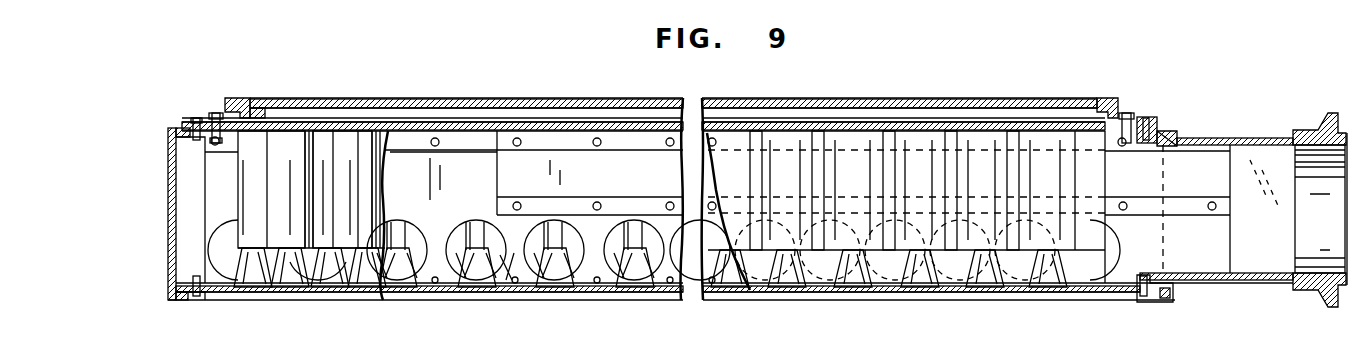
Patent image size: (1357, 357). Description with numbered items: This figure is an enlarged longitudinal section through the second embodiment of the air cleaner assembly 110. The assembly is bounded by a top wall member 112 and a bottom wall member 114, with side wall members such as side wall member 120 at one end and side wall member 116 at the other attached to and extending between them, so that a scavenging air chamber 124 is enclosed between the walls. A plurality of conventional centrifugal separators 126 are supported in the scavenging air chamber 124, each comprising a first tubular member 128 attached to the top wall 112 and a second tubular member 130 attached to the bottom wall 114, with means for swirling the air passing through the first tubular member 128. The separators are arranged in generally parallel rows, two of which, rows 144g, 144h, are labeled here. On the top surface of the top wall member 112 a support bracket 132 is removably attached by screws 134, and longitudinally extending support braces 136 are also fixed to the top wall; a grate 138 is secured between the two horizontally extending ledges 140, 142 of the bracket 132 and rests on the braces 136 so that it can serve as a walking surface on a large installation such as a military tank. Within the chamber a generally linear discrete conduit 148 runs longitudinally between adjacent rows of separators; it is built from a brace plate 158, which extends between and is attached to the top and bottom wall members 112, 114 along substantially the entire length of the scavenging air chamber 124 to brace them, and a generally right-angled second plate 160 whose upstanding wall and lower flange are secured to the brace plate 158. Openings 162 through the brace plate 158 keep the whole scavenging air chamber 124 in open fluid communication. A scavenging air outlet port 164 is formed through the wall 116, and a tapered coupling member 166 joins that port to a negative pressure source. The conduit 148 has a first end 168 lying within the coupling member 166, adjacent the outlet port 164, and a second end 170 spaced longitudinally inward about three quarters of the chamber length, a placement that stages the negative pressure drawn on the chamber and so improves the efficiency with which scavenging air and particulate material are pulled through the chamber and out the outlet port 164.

The air cleaner assembly 110 is at (749, 188).
The top wall member 112 is at (452, 125).
The bottom wall member 114 is at (563, 291).
The side wall member 116 is at (1173, 293).
The side wall member 120 is at (168, 134).
The scavenging air chamber 124 is at (509, 268).
The centrifugal separator 126 is at (860, 148).
The first tubular member 128 is at (983, 138).
The second tubular member 130 is at (987, 275).
The support bracket 132 is at (556, 97).
The screw 134 is at (214, 112).
The support brace 136 is at (396, 116).
The grate 138 is at (627, 122).
The ledge 140 is at (241, 100).
The ledge 142 is at (268, 113).
The row 144g is at (250, 282).
The row 144h is at (288, 282).
The conduit 148 is at (629, 171).
The brace plate 158 is at (423, 276).
The second plate 160 is at (609, 167).
The opening 162 is at (232, 268).
The scavenging air outlet port 164 is at (1181, 142).
The tapered coupling member 166 is at (1271, 134).
The first end 168 is at (1236, 154).
The second end 170 is at (497, 185).